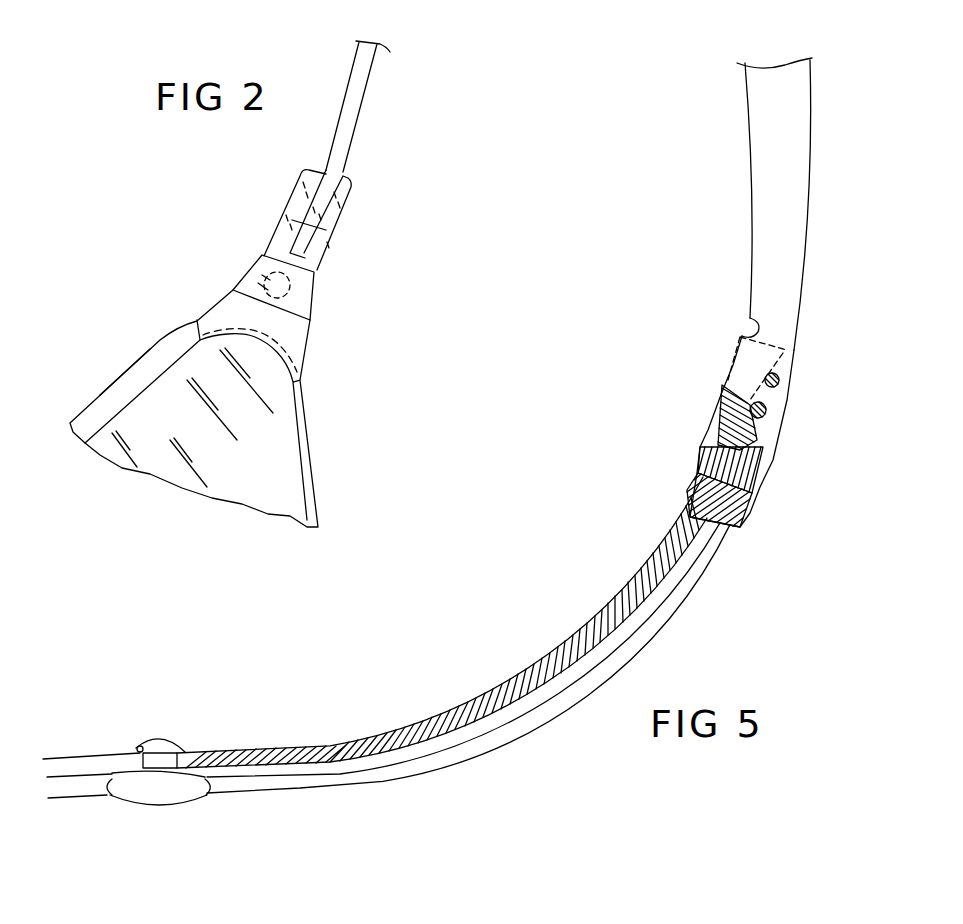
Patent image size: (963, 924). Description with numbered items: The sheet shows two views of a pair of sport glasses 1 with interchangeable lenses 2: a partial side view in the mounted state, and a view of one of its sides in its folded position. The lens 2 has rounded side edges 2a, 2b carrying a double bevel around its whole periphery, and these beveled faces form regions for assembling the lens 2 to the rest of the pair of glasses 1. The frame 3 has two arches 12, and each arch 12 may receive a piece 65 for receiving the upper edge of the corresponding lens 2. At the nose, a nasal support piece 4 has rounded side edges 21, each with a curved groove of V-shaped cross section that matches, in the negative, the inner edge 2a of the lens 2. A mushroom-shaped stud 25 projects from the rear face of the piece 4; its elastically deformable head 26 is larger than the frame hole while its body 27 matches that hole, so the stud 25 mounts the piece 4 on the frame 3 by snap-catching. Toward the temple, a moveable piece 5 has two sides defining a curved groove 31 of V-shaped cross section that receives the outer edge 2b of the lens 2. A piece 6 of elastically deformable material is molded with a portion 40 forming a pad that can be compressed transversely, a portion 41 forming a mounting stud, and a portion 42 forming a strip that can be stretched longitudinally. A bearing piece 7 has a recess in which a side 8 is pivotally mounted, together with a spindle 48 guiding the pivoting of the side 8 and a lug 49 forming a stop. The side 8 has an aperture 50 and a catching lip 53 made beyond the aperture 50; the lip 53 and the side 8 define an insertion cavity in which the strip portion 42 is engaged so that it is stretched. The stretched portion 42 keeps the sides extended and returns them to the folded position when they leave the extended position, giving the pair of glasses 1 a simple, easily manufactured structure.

In FIG. 2, the pair of glasses 1 is at (367, 377).
In FIG. 2, the lens 2 is at (280, 483).
In FIG. 5, the lens 2 is at (455, 772).
In FIG. 5, the inner side edge 2a is at (235, 753).
In FIG. 5, the outer side edge 2b is at (730, 530).
In FIG. 2, the frame 3 is at (160, 330).
In FIG. 5, the frame 3 is at (73, 803).
In FIG. 5, the nasal support piece 4 is at (160, 807).
In FIG. 2, the moveable piece 5 is at (305, 340).
In FIG. 5, the moveable piece 5 is at (755, 517).
In FIG. 2, the elastically deformable piece 6 is at (316, 302).
In FIG. 5, the elastically deformable piece 6 is at (775, 470).
In FIG. 2, the bearing piece 7 is at (335, 237).
In FIG. 5, the bearing piece 7 is at (783, 427).
In FIG. 2, the side 8 is at (366, 103).
In FIG. 5, the side 8 is at (752, 180).
In FIG. 5, the arch 12 is at (437, 720).
In FIG. 5, the rounded side edge 21 is at (105, 797).
In FIG. 5, the mushroom-shaped stud 25 is at (172, 737).
In FIG. 5, the head 26 is at (158, 737).
In FIG. 5, the body 27 is at (138, 747).
In FIG. 5, the curved groove 31 is at (683, 520).
In FIG. 2, the pad portion 40 is at (237, 273).
In FIG. 5, the pad portion 40 is at (760, 477).
In FIG. 2, the mounting stud portion 41 is at (247, 270).
In FIG. 5, the mounting stud portion 41 is at (727, 460).
In FIG. 5, the strip portion 42 is at (727, 400).
In FIG. 2, the spindle 48 is at (295, 178).
In FIG. 5, the spindle 48 is at (773, 367).
In FIG. 2, the lug 49 is at (275, 212).
In FIG. 5, the lug 49 is at (768, 407).
In FIG. 5, the aperture 50 is at (779, 378).
In FIG. 5, the catching lip 53 is at (740, 323).
In FIG. 2, the lens upper edge receiving piece 65 is at (104, 384).